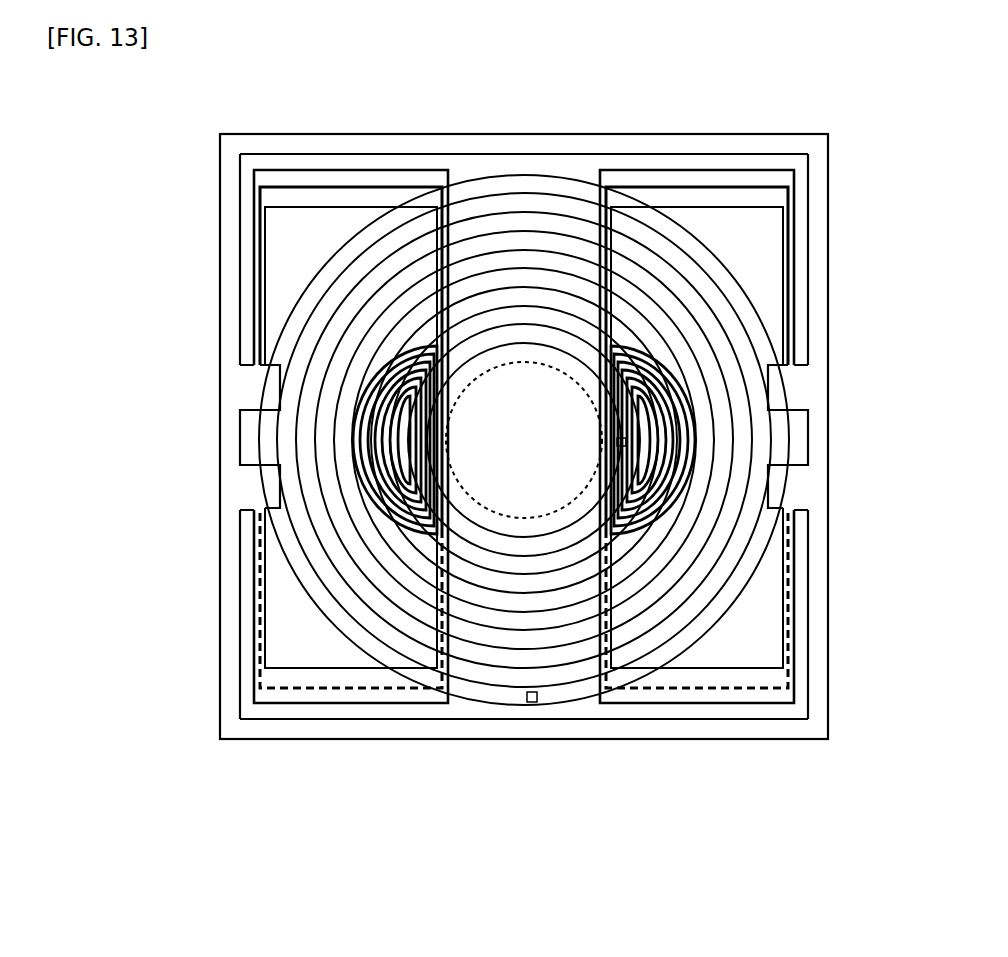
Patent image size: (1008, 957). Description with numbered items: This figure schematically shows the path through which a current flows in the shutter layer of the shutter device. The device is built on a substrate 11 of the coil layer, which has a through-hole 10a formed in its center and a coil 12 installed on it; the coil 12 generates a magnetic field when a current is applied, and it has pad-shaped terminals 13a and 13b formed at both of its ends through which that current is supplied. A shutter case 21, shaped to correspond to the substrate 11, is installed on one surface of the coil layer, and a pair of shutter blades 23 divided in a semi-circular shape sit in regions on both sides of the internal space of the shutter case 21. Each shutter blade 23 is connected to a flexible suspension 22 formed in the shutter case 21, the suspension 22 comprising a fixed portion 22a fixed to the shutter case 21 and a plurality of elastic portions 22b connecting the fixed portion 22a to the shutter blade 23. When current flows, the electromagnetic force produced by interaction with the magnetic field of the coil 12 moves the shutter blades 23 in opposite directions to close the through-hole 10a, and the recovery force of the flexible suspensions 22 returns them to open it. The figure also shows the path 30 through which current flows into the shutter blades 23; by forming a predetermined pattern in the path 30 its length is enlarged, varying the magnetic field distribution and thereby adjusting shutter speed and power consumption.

The substrate 11 is at (706, 741).
The shutter case 21 is at (414, 721).
The flexible suspension 22 is at (110, 226).
The fixed portion 22a is at (253, 385).
The elastic portion 22b is at (251, 244).
The path 30 is at (355, 184).
The coil 12 is at (725, 593).
The shutter blade 23 is at (355, 446).
The pad-shaped terminal 13a is at (627, 444).
The pad-shaped terminal 13b is at (530, 704).
The through-hole 10a is at (543, 365).